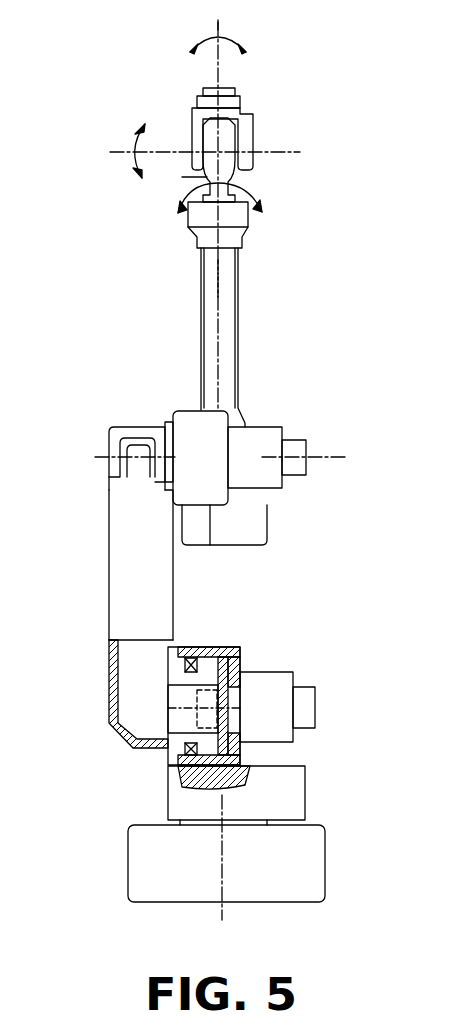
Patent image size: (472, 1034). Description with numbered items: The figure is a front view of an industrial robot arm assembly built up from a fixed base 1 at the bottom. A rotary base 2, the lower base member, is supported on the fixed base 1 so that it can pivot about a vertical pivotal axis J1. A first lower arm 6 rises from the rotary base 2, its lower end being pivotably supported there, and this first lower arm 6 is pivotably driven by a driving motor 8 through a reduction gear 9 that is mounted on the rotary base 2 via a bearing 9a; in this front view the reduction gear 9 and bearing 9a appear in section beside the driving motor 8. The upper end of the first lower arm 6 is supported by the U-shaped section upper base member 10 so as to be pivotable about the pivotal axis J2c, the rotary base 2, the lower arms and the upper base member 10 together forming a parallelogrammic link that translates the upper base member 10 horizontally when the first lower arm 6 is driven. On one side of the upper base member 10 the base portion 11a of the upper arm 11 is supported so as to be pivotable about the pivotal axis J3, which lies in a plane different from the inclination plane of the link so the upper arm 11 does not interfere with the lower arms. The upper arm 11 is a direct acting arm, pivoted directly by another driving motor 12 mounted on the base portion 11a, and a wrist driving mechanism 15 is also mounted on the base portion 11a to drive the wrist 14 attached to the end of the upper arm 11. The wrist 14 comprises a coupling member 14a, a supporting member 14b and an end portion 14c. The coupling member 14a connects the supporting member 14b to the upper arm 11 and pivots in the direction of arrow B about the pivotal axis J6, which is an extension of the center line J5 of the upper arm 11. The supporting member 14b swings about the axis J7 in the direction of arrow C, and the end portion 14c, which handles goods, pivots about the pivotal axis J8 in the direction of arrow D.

The fixed base 1 is at (325, 865).
The rotary base 2 is at (305, 792).
The first lower arm 6 is at (112, 550).
The driving motor 8 is at (316, 707).
The reduction gear 9 is at (230, 650).
The bearing 9a is at (190, 658).
The upper base member 10 is at (125, 427).
The upper arm 11 is at (238, 310).
The base portion 11a is at (188, 410).
The driving motor 12 is at (270, 426).
The wrist 14 is at (310, 168).
The coupling member 14a is at (271, 212).
The supporting member 14b is at (254, 152).
The end portion 14c is at (243, 97).
The wrist driving mechanism 15 is at (268, 525).
The pivotal axis J1 is at (225, 905).
The pivotal axis J2c is at (100, 462).
The pivotal axis J3 is at (333, 461).
The center line J5 is at (221, 282).
The pivotal axis J6 is at (182, 177).
The axis J7 is at (111, 152).
The pivotal axis J8 is at (219, 24).
The arrow B is at (172, 206).
The arrow C is at (130, 137).
The arrow D is at (252, 47).